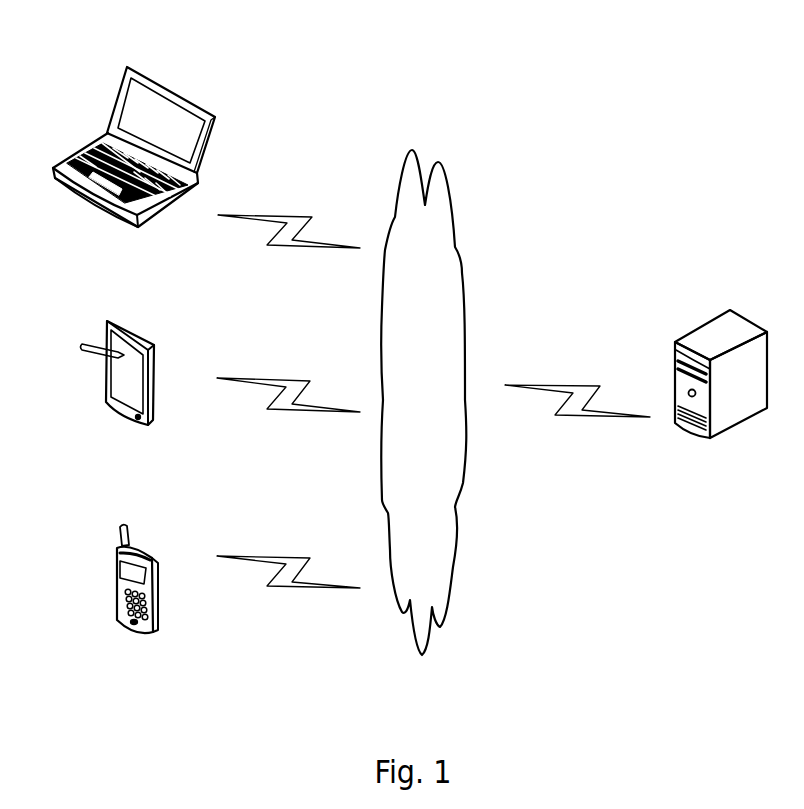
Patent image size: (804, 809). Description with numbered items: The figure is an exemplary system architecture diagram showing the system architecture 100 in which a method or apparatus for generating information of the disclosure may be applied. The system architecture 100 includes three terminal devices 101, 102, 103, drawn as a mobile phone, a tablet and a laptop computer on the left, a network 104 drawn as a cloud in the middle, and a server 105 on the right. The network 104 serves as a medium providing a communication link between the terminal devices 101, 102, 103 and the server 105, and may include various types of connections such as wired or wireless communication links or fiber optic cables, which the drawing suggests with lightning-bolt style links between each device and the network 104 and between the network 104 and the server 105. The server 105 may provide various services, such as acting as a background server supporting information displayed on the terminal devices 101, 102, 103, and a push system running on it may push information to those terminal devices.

The system architecture 100 is at (635, 56).
The terminal device 101 is at (137, 598).
The terminal device 102 is at (118, 393).
The terminal device 103 is at (134, 166).
The network 104 is at (423, 402).
The server 105 is at (721, 397).